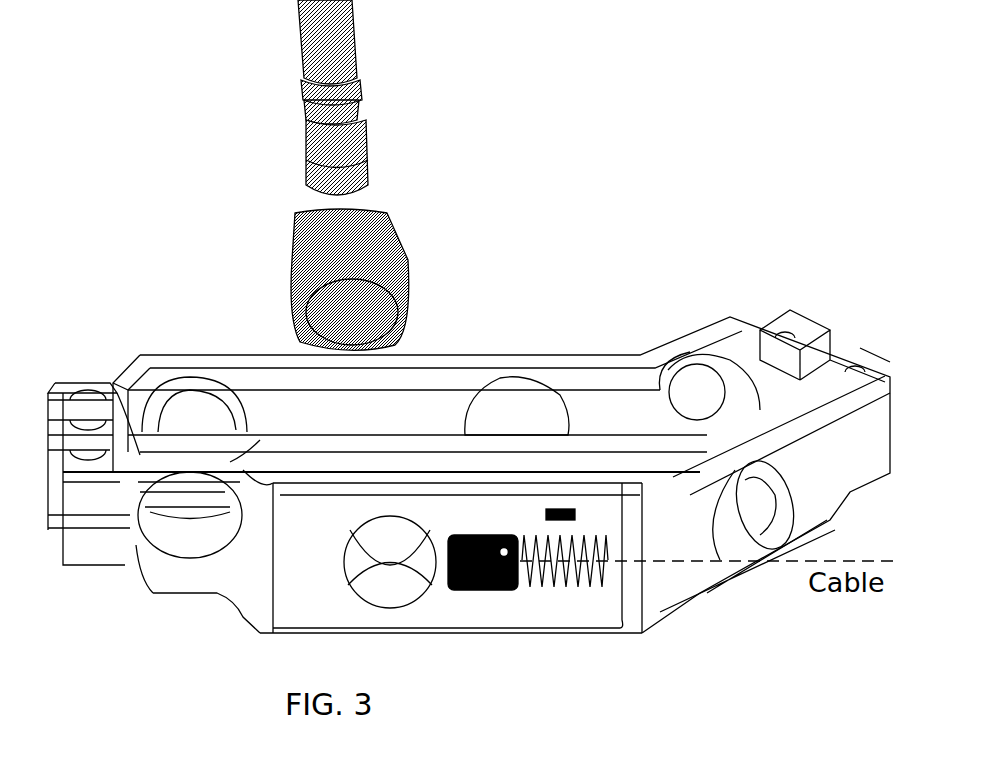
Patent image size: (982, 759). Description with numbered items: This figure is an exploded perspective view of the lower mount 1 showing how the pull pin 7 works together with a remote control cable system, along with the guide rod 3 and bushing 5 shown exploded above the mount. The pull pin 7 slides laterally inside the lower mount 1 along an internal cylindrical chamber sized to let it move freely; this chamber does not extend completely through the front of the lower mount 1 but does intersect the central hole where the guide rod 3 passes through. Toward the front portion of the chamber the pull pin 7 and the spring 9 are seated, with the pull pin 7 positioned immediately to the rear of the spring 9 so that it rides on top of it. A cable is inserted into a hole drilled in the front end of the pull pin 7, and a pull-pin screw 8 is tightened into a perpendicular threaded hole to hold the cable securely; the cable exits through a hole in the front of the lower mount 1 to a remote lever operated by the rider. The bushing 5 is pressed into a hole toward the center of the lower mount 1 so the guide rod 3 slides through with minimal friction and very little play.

The lower mount 1 is at (422, 408).
The guide rod 3 is at (360, 33).
The bushing 5 is at (405, 258).
The pull pin 7 is at (480, 590).
The pull-pin screw 8 is at (582, 515).
The spring 9 is at (558, 588).